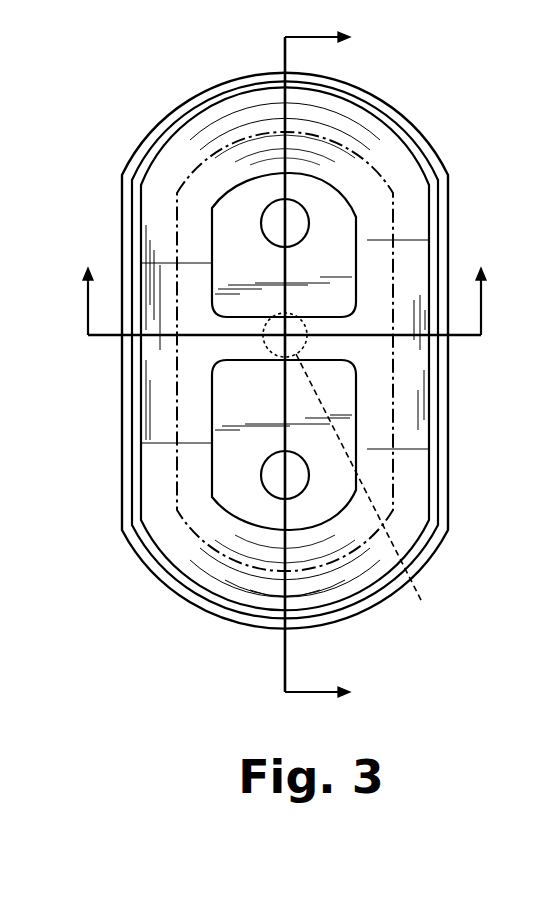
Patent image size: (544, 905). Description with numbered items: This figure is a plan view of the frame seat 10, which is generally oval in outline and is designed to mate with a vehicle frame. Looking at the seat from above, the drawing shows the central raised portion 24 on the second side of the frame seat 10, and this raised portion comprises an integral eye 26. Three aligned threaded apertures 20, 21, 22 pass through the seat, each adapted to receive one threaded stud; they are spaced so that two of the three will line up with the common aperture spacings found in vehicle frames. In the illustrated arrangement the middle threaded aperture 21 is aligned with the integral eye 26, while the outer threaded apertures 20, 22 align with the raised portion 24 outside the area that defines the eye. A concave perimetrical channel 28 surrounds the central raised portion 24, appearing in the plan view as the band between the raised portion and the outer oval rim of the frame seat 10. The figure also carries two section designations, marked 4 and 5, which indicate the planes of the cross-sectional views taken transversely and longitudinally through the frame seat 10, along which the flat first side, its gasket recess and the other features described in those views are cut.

The frame seat 10 is at (410, 120).
The threaded aperture 20 is at (268, 200).
The threaded aperture 21 is at (356, 473).
The threaded aperture 22 is at (265, 495).
The central raised portion 24 is at (325, 510).
The integral eye 26 is at (265, 267).
The concave perimetrical channel 28 is at (393, 212).
The section line 4- 4 is at (284, 301).
The section line 5- 5 is at (317, 366).